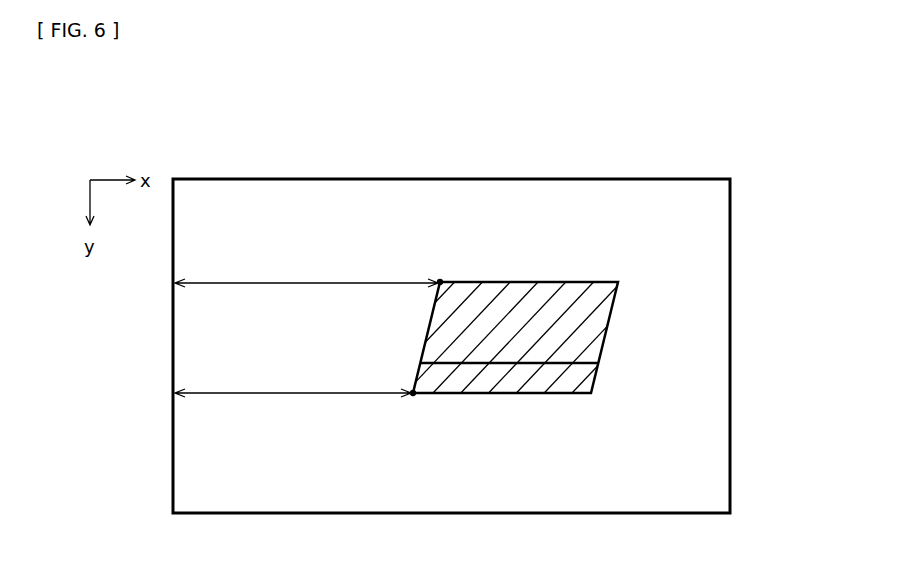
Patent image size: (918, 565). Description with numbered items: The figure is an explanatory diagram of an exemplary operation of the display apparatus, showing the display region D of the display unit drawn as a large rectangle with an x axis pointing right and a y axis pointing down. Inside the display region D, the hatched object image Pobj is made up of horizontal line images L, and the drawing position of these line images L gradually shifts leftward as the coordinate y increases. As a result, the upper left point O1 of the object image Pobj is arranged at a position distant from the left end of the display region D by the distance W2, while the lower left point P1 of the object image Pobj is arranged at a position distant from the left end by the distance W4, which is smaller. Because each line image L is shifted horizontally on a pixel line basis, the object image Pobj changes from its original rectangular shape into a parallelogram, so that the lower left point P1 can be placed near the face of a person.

The display region D is at (618, 179).
The object image Pobj is at (588, 315).
The line images L is at (580, 363).
The upper left point O1 is at (438, 269).
The lower left point P1 is at (412, 412).
The distance W2 is at (297, 280).
The distance W4 is at (322, 398).